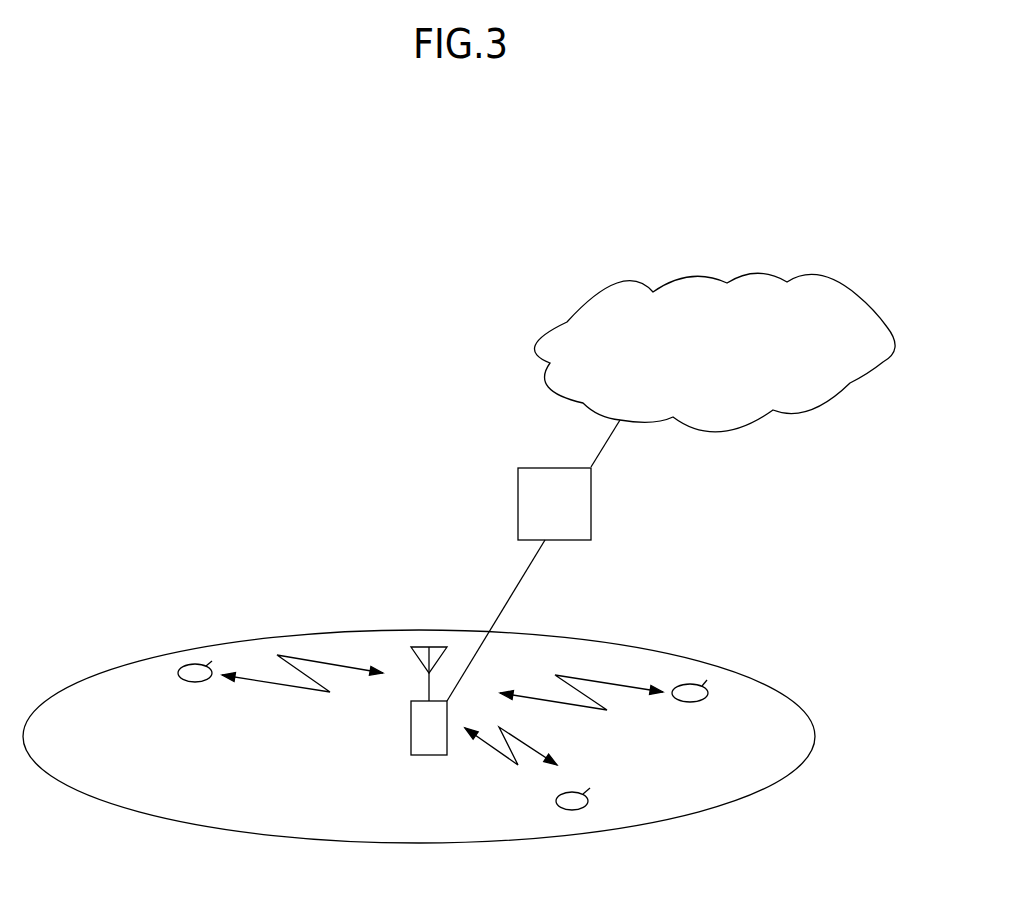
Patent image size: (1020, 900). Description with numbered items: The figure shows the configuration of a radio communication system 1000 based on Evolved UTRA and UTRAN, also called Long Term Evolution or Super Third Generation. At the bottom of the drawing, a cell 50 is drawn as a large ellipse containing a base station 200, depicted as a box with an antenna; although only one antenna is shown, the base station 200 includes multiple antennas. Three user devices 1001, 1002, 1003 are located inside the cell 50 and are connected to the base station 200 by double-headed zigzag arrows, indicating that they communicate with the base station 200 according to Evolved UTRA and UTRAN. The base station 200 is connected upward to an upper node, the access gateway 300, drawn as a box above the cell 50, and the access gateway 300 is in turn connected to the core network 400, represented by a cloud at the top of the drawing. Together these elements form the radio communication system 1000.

The radio communication system 1000 is at (198, 311).
The core network 400 is at (760, 273).
The access gateway 300 is at (591, 502).
The base station 200 is at (411, 734).
The user device 1001 is at (195, 682).
The user device 1002 is at (553, 799).
The user device 1003 is at (690, 702).
The cell 50 is at (672, 822).